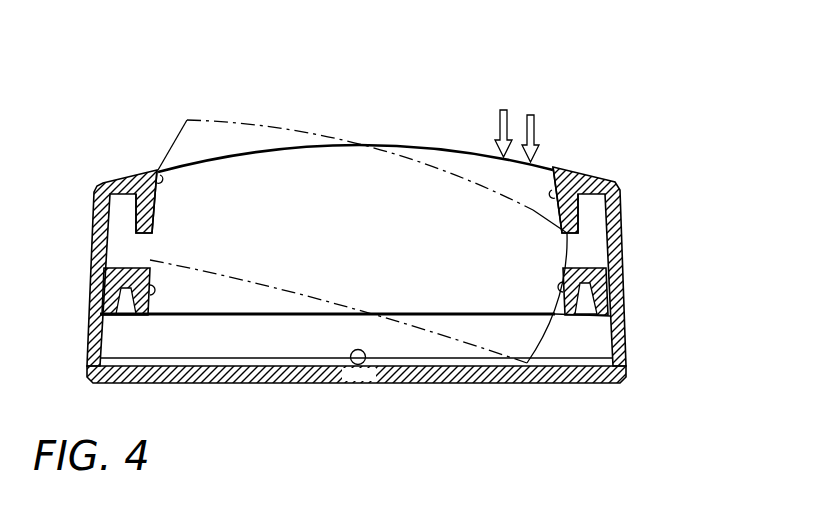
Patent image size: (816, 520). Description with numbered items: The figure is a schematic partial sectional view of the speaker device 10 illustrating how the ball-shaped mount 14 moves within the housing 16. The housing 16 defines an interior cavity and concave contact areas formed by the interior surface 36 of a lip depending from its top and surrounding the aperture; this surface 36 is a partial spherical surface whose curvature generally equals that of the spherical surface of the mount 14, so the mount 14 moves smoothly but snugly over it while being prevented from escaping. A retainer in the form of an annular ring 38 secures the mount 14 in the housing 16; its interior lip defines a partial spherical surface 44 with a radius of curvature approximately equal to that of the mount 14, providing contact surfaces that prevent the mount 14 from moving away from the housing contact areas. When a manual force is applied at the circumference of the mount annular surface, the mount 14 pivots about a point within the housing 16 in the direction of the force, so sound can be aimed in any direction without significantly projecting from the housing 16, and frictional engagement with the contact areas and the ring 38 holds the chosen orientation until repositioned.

The speaker device 10 is at (105, 70).
The mount 14 is at (443, 158).
The housing 16 is at (390, 275).
The interior surface 36 is at (158, 168).
The annular ring 38 is at (102, 268).
The partial spherical surface 44 is at (100, 312).